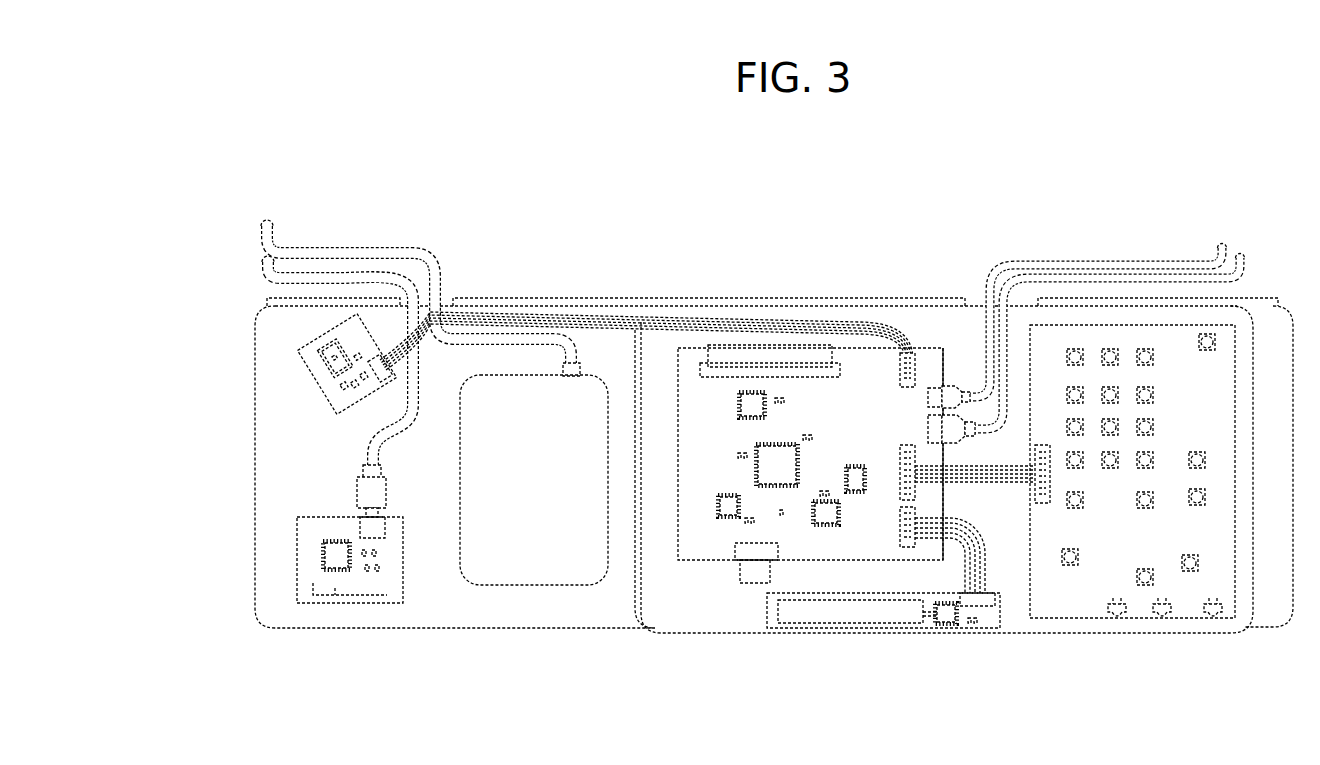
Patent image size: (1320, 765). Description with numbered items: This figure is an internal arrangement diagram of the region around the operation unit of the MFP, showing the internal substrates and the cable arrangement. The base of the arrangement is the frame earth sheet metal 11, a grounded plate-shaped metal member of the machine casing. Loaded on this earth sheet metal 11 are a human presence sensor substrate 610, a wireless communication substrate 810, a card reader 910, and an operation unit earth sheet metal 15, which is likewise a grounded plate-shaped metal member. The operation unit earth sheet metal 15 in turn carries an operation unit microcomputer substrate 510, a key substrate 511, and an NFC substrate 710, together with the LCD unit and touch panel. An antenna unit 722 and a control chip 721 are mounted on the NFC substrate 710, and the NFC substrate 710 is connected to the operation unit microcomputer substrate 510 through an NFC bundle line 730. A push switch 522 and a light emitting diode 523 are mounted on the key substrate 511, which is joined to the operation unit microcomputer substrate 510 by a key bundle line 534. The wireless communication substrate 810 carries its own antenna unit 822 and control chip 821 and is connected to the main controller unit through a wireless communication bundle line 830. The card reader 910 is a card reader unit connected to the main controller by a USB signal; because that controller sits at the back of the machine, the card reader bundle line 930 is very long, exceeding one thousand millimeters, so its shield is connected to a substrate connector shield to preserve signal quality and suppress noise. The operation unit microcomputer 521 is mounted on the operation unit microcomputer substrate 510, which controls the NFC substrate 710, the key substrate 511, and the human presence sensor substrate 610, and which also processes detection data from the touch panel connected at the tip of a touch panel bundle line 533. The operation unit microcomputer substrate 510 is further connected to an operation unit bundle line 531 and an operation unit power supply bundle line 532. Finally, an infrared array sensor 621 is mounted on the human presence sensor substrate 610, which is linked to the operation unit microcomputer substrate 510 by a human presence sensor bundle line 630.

The frame earth sheet metal 11 is at (472, 607).
The operation unit earth sheet metal 15 is at (890, 312).
The operation unit microcomputer substrate 510 is at (939, 444).
The key substrate 511 is at (1163, 452).
The operation unit microcomputer 521 is at (765, 488).
The push switch 522 is at (1153, 420).
The light emitting diode 523 is at (1155, 632).
The operation unit bundle line 531 is at (1122, 277).
The operation unit power supply bundle line 532 is at (718, 363).
The touch panel bundle line 533 is at (755, 575).
The key bundle line 534 is at (1007, 483).
The human presence sensor substrate 610 is at (289, 348).
The infrared array sensor 621 is at (323, 345).
The human presence sensor bundle line 630 is at (755, 322).
The NFC substrate 710 is at (877, 647).
The control chip 721 is at (943, 622).
The antenna unit 722 is at (865, 617).
The NFC bundle line 730 is at (990, 547).
The wireless communication substrate 810 is at (340, 566).
The control chip 821 is at (337, 560).
The antenna unit 822 is at (313, 585).
The wireless communication bundle line 830 is at (332, 278).
The card reader 910 is at (535, 393).
The card reader bundle line 930 is at (427, 255).